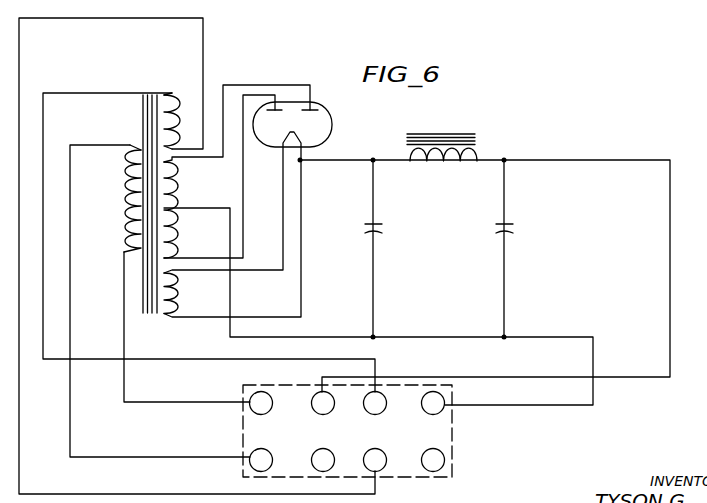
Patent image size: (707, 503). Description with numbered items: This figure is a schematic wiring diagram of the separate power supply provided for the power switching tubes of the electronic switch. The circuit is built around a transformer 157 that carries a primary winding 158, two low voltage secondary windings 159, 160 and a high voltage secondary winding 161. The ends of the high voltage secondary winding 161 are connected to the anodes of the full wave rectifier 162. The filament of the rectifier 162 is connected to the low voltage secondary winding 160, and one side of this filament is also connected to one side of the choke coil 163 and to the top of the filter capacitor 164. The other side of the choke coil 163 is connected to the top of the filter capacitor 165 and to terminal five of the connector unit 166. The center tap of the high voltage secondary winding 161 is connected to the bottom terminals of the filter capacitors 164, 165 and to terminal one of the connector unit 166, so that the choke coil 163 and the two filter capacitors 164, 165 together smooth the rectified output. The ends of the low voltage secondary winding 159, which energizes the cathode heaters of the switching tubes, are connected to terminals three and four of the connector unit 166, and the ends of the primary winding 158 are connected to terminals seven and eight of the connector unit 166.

The transformer 157 is at (141, 97).
The primary winding 158 is at (128, 228).
The low voltage secondary winding 159 is at (174, 96).
The low voltage secondary winding 160 is at (178, 293).
The high voltage secondary winding 161 is at (175, 203).
The full wave rectifier 162 is at (316, 104).
The choke coil 163 is at (447, 166).
The filter capacitor 164 is at (383, 226).
The filter capacitor 165 is at (515, 226).
The connector unit 166 is at (243, 444).